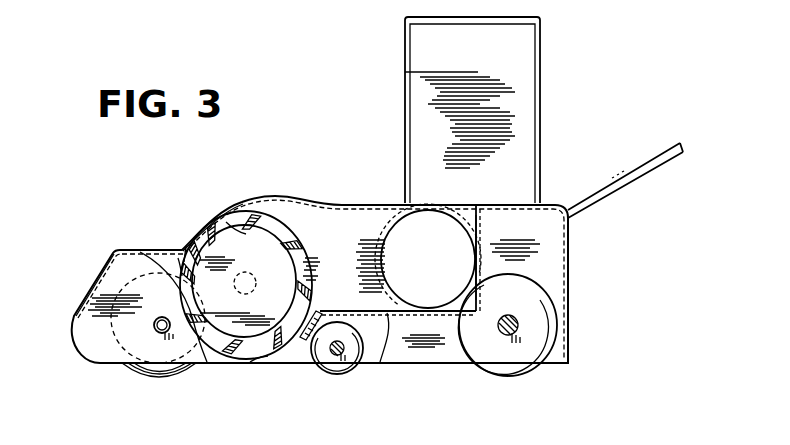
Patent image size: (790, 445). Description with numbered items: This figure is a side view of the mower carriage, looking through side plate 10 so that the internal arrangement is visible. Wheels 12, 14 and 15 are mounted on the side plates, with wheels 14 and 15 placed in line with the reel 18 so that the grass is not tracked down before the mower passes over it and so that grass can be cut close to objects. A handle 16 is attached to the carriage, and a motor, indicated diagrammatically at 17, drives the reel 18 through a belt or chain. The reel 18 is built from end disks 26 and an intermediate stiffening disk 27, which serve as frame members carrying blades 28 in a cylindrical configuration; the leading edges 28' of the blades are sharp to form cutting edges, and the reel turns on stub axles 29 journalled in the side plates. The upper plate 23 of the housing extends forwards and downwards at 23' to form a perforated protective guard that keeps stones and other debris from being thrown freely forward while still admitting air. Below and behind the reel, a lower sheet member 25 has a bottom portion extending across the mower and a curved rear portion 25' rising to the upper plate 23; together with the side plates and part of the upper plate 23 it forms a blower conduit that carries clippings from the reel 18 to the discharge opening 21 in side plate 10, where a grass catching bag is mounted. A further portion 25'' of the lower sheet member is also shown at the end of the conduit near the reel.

The side plate 10 is at (358, 274).
The wheel 12 is at (147, 373).
The wheel 14 is at (330, 363).
The wheel 15 is at (520, 360).
The handle 16 is at (640, 172).
The motor 17 is at (535, 103).
The reel 18 is at (303, 240).
The opening 21 is at (392, 229).
The upper plate 23 is at (242, 204).
The protective guard 23' is at (71, 285).
The lower sheet member 25 is at (399, 353).
The curved rear portion 25' is at (508, 257).
The partition end 25'' is at (330, 312).
The end disk 26 is at (232, 225).
The intermediate stiffening disk 27 is at (257, 259).
The blade 28 is at (244, 374).
The leading edge 28' is at (145, 249).
The stub axle 29 is at (256, 283).